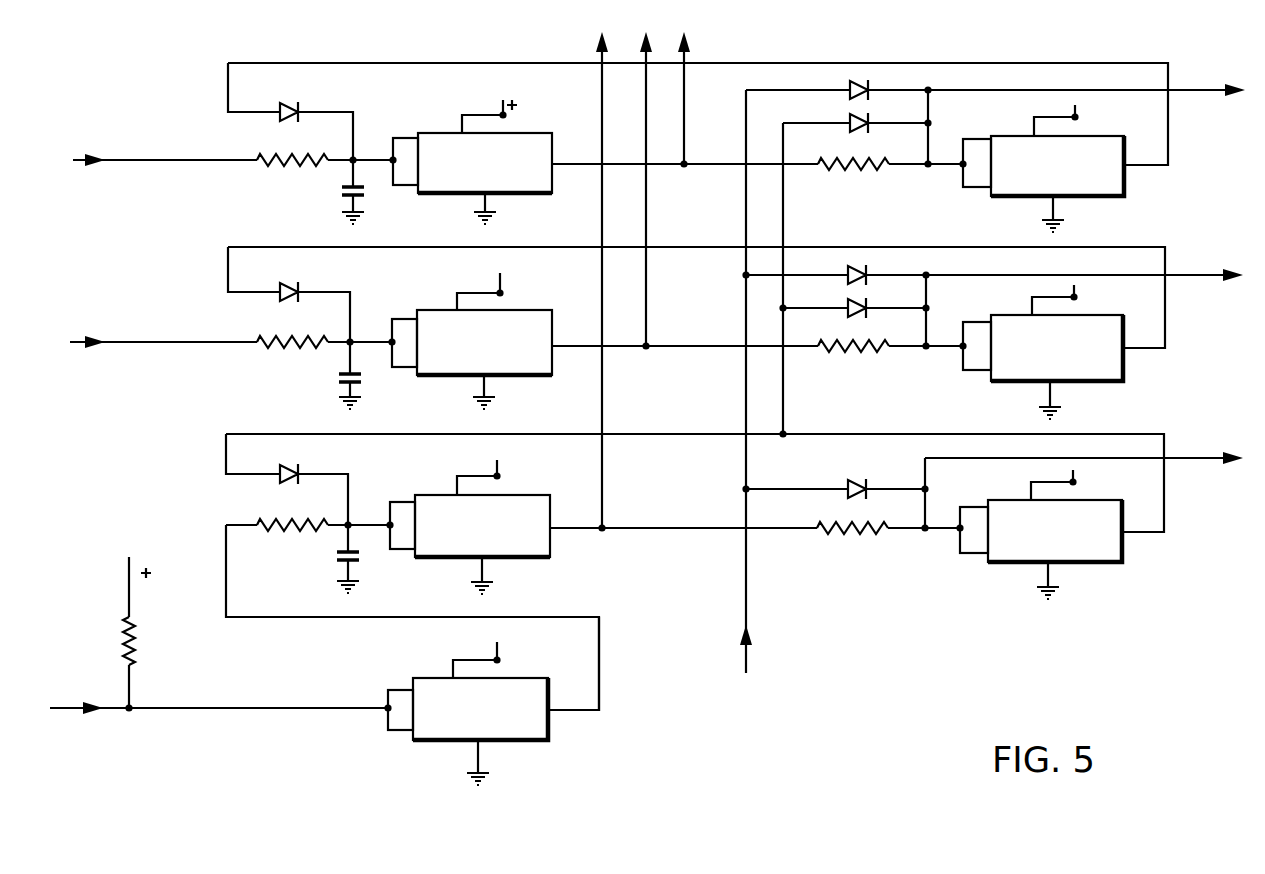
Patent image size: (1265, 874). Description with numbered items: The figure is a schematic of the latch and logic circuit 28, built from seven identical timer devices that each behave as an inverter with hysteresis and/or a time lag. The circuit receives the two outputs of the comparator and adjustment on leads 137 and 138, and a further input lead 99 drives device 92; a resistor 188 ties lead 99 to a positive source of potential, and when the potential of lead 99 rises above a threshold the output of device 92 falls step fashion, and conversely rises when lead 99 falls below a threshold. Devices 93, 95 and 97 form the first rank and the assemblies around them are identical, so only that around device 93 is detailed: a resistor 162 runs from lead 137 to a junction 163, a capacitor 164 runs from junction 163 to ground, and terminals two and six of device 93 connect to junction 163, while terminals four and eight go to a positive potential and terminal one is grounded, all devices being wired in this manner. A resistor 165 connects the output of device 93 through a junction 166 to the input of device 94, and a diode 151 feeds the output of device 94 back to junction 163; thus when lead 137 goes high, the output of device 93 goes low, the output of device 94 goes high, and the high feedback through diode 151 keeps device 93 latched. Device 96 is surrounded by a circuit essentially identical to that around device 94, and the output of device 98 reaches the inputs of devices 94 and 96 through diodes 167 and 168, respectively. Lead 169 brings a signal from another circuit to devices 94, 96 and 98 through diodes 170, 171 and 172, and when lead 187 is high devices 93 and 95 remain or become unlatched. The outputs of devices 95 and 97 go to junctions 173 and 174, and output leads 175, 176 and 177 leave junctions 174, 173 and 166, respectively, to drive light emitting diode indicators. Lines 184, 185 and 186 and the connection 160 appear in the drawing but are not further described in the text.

The latch and logic circuit 28 is at (232, 732).
The lead 137 is at (140, 159).
The lead 138 is at (164, 318).
The input lead 99 is at (73, 702).
The resistor 162 is at (260, 152).
The diode 151 is at (302, 110).
The junction 163 is at (356, 157).
The capacitor 164 is at (340, 193).
The device 93 is at (533, 195).
The device 95 is at (536, 310).
The device 97 is at (535, 495).
The device 92 is at (532, 677).
The device 94 is at (1116, 136).
The device 96 is at (1122, 318).
The device 98 is at (1118, 500).
The output lead 175 is at (602, 91).
The output lead 176 is at (646, 100).
The output lead 177 is at (686, 120).
The junction 166 is at (686, 162).
The junction 173 is at (648, 344).
The junction 174 is at (603, 525).
The diode 170 is at (849, 90).
The diode 167 is at (849, 123).
The diode 171 is at (849, 276).
The diode 168 is at (849, 310).
The diode 172 is at (852, 488).
The resistor 165 is at (860, 168).
The output line 184 is at (1196, 96).
The output line 185 is at (1198, 278).
The output line 186 is at (1190, 452).
The lead 187 is at (860, 435).
The lead 169 is at (748, 608).
The resistor 188 is at (140, 632).
The feedback line 160 is at (579, 714).